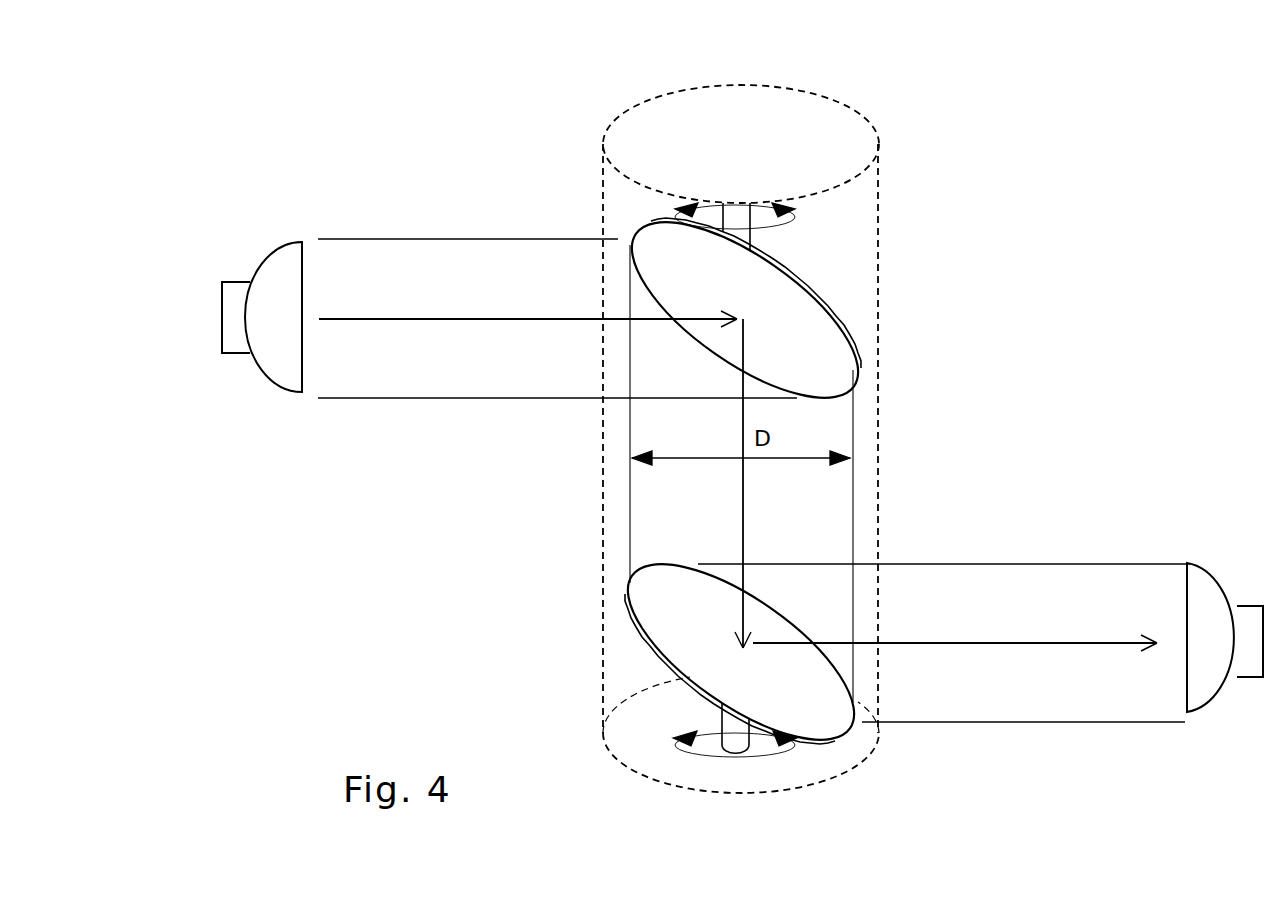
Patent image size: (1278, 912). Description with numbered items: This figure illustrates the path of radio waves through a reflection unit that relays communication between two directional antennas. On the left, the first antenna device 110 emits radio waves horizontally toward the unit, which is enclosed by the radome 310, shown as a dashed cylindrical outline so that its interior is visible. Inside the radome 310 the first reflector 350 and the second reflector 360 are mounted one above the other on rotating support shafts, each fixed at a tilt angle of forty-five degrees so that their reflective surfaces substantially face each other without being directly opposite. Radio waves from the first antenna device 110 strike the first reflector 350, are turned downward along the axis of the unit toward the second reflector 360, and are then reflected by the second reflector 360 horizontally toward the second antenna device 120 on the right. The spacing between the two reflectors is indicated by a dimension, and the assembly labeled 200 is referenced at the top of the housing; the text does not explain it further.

The first antenna device 110 is at (278, 263).
The second antenna device 120 is at (1203, 580).
The housing 200 is at (782, 414).
The radome 310 is at (885, 225).
The first reflector 350 is at (830, 345).
The second reflector 360 is at (823, 680).